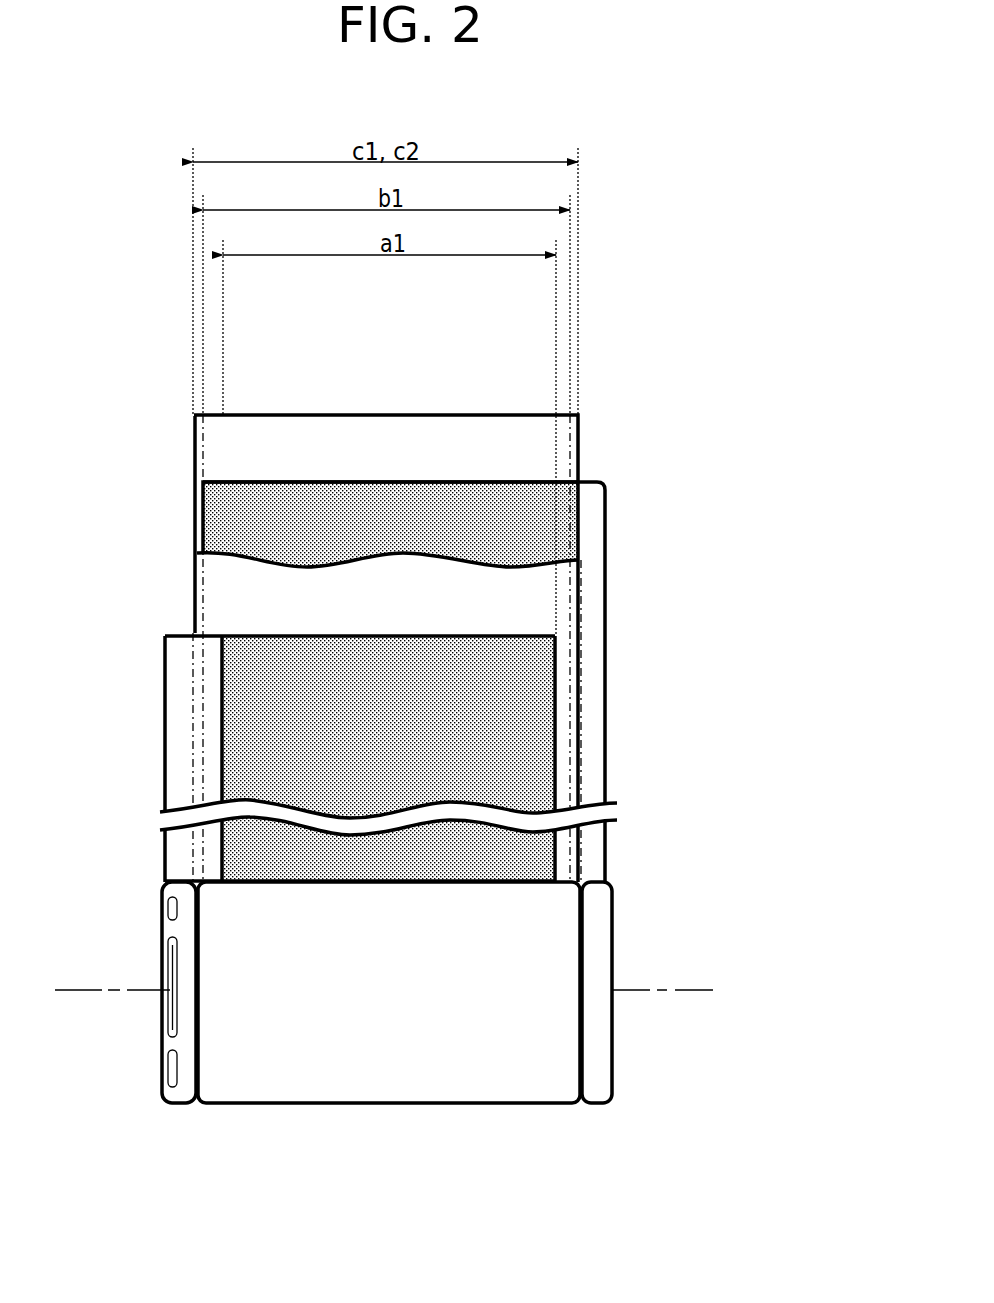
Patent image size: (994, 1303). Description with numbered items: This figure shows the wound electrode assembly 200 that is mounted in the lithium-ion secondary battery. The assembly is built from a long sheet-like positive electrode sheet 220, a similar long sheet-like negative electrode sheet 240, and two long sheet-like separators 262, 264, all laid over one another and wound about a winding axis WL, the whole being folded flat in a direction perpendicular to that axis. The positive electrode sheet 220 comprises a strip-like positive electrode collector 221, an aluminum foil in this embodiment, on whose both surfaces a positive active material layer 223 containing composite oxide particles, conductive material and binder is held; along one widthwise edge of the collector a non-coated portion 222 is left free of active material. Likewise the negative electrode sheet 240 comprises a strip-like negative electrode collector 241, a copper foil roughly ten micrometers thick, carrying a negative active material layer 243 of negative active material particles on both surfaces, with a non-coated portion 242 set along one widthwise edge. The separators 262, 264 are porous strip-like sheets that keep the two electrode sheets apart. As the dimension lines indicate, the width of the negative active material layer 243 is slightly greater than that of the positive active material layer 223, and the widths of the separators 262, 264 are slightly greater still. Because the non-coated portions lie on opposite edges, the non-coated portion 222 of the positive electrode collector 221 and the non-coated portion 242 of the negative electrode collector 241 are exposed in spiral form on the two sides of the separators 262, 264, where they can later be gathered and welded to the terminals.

The wound electrode assembly 200 is at (427, 1075).
The positive electrode sheet 220 is at (286, 840).
The positive electrode collector 221 is at (373, 632).
The non-coated portion 222 is at (185, 775).
The positive active material layer 223 is at (260, 750).
The negative electrode sheet 240 is at (417, 738).
The negative electrode collector 241 is at (376, 478).
The non-coated portion 242 is at (588, 547).
The negative active material layer 243 is at (493, 500).
The separator 262 is at (210, 603).
The separator 264 is at (213, 447).
The winding axis WL is at (700, 990).